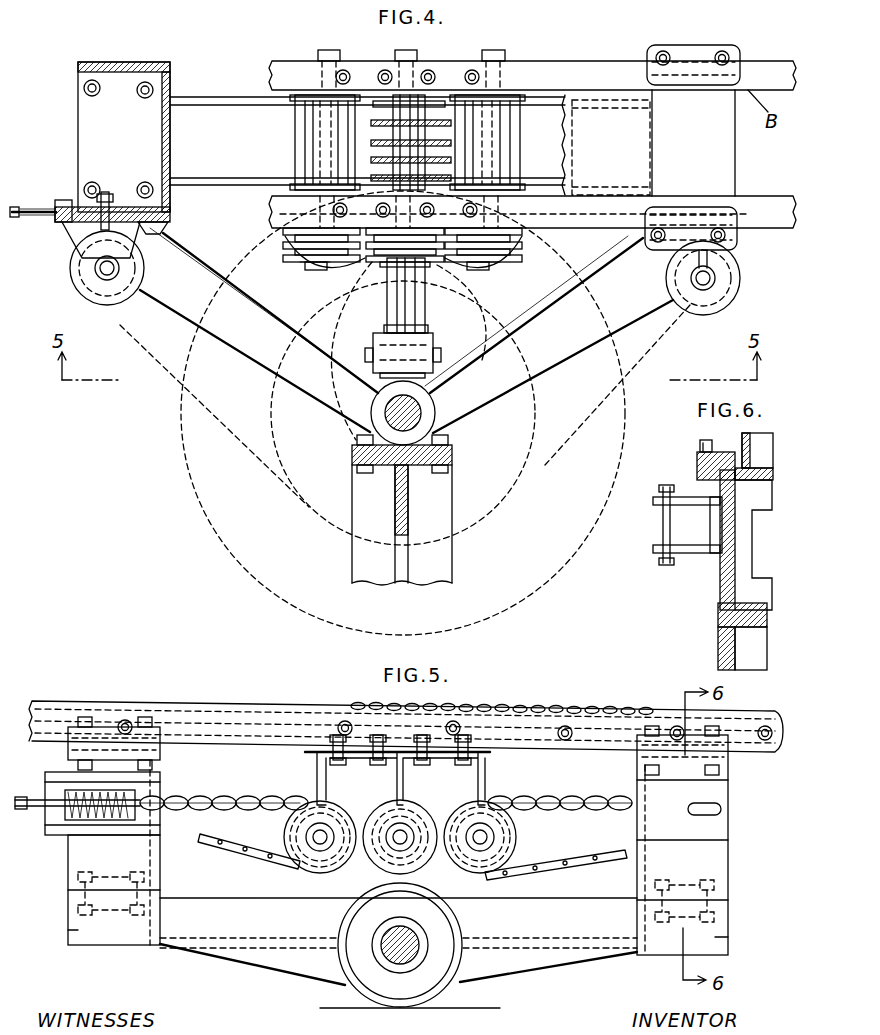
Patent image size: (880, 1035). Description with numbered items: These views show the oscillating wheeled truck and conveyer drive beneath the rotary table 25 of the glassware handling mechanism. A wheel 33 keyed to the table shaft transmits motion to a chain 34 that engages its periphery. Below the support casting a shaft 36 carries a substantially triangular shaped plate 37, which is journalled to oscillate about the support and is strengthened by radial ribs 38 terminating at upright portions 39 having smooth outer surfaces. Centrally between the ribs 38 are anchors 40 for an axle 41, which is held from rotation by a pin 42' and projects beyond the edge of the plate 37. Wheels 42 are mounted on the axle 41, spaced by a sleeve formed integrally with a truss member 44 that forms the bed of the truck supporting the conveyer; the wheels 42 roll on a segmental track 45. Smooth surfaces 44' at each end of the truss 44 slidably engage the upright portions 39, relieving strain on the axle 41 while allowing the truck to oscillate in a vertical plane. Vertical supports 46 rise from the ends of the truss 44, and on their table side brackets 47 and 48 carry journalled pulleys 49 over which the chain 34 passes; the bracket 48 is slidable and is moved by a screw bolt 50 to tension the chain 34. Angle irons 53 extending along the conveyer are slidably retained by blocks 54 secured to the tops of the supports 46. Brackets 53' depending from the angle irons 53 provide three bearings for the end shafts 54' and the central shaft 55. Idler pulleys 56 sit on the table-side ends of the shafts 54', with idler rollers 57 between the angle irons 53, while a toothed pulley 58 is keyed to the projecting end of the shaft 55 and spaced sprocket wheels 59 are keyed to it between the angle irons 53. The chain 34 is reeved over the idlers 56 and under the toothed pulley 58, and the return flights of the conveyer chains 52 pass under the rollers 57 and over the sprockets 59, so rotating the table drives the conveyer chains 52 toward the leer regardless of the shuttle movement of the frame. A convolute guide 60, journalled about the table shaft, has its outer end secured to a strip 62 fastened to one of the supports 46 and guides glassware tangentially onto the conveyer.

In FIG. 4, the table 25 is at (550, 588).
In FIG. 4, the wheel 33 is at (492, 517).
In FIG. 5, the chain 34 is at (230, 797).
In FIG. 4, the shaft 36 is at (393, 407).
In FIG. 4, the triangular shaped plate 37 is at (447, 363).
In FIG. 4, the radial strengthening ribs 38 is at (262, 338).
In FIG. 4, the upright portions 39 is at (150, 236).
In FIG. 4, the anchors 40 is at (430, 330).
In FIG. 4, the axle 41 is at (426, 320).
In FIG. 5, the wheels 42 is at (418, 945).
In FIG. 4, the pin 42' is at (423, 352).
In FIG. 4, the truss member 44 is at (410, 127).
In FIG. 5, the truss member 44 is at (398, 941).
In FIG. 4, the smooth surfaces 44' is at (133, 211).
In FIG. 5, the smooth surfaces 44' is at (395, 934).
In FIG. 5, the segmental track 45 is at (450, 1010).
In FIG. 4, the vertical supports 46 is at (160, 140).
In FIG. 6, the vertical supports 46 is at (740, 537).
In FIG. 5, the vertical supports 46 is at (743, 790).
In FIG. 4, the bracket 47 is at (741, 276).
In FIG. 6, the bracket 47 is at (714, 560).
In FIG. 4, the bracket 48 is at (68, 242).
In FIG. 5, the bracket 48 is at (56, 771).
In FIG. 4, the pulleys 49 is at (82, 292).
In FIG. 4, the screw bolt 50 is at (47, 206).
In FIG. 5, the conveyer chains 52 is at (500, 706).
In FIG. 4, the angle irons 53 is at (532, 139).
In FIG. 5, the brackets 53' is at (397, 770).
In FIG. 4, the blocks 54 is at (718, 132).
In FIG. 4, the end shafts 54' is at (402, 283).
In FIG. 5, the end shafts 54' is at (380, 857).
In FIG. 4, the central shaft 55 is at (420, 262).
In FIG. 5, the central shaft 55 is at (406, 834).
In FIG. 4, the idler pulleys 56 is at (300, 262).
In FIG. 5, the idler pulleys 56 is at (284, 834).
In FIG. 4, the idler rollers 57 is at (296, 130).
In FIG. 4, the toothed pulley 58 is at (375, 264).
In FIG. 5, the toothed pulley 58 is at (420, 862).
In FIG. 4, the sprocket wheels 59 is at (380, 101).
In FIG. 4, the convolute guide 60 is at (409, 351).
In FIG. 4, the strip 62 is at (534, 311).